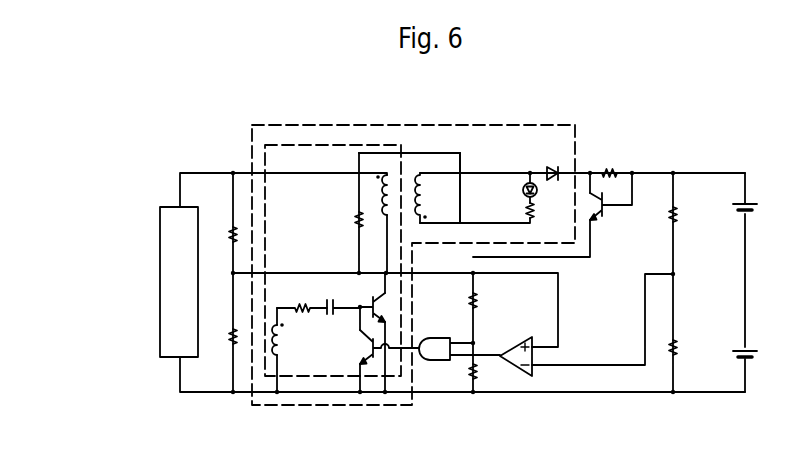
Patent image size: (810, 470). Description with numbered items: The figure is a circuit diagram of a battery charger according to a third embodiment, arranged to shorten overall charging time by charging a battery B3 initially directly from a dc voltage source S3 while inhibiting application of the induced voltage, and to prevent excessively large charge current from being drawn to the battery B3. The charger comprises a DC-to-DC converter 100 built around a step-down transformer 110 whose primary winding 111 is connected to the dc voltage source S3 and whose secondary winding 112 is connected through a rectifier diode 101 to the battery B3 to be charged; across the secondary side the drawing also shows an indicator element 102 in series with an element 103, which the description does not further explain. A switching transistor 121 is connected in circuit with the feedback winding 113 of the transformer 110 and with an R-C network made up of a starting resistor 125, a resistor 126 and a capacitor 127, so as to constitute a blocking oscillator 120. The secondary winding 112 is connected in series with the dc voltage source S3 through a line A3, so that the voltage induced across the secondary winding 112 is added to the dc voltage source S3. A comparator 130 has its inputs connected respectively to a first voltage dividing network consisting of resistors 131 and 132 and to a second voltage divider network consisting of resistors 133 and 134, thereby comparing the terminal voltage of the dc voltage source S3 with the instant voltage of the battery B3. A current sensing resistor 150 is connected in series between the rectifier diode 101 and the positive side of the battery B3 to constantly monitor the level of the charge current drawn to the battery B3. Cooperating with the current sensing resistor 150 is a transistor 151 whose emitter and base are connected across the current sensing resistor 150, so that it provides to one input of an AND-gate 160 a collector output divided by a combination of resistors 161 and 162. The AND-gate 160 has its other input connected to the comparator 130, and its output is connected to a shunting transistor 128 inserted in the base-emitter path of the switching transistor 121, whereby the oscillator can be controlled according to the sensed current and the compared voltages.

The DC-to-DC converter 100 is at (578, 122).
The blocking oscillator 120 is at (284, 140).
The step-down transformer 110 is at (406, 176).
The line A3 is at (425, 152).
The primary winding 111 is at (382, 192).
The secondary winding 112 is at (421, 187).
The feedback winding 113 is at (273, 355).
The starting resistor 125 is at (357, 216).
The resistor 126 is at (297, 301).
The capacitor 127 is at (330, 299).
The switching transistor 121 is at (387, 305).
The shunting transistor 128 is at (356, 347).
The resistor 133 is at (232, 229).
The resistor 134 is at (229, 341).
The dc voltage source S3 is at (160, 233).
The rectifier diode 101 is at (549, 168).
The light emitting diode 102 is at (522, 191).
The resistor 103 is at (532, 212).
The current sensing resistor 150 is at (605, 170).
The transistor 151 is at (604, 205).
The resistor 131 is at (681, 212).
The resistor 132 is at (680, 350).
The battery B3 is at (752, 207).
The AND-gate 160 is at (435, 362).
The resistor 161 is at (478, 300).
The resistor 162 is at (477, 378).
The comparator 130 is at (530, 376).